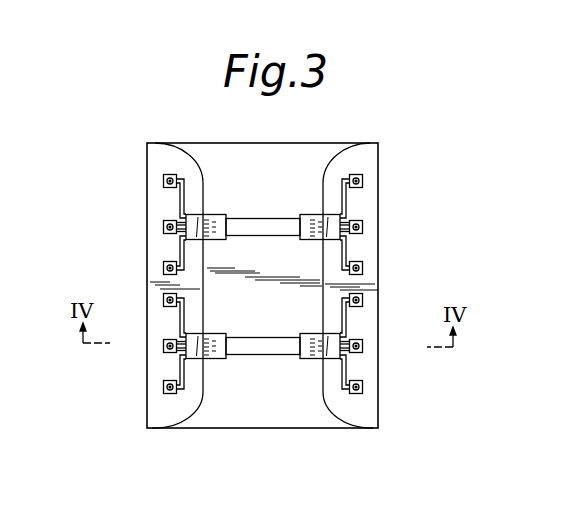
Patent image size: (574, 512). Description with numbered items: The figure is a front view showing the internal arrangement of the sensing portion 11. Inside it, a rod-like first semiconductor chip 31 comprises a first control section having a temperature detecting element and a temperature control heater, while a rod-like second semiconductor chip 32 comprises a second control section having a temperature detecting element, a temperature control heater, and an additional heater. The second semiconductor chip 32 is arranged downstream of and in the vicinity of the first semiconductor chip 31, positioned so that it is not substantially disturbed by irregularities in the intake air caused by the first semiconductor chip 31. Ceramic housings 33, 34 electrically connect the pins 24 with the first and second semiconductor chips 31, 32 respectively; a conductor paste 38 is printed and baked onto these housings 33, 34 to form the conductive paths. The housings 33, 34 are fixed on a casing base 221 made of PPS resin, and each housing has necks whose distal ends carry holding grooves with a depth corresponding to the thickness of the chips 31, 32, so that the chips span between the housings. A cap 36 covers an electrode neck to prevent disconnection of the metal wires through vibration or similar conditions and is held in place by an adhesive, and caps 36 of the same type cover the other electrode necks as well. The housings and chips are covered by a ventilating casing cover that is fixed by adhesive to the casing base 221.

The sensing portion 11 is at (181, 138).
The casing base 221 is at (325, 413).
The ceramic housing 34 is at (160, 212).
The cap 36 is at (197, 358).
The second semiconductor chip 32 is at (284, 226).
The first semiconductor chip 31 is at (239, 346).
The conductor paste 38 is at (348, 198).
The ceramic housing 33 is at (362, 247).
The pin 24 is at (364, 268).